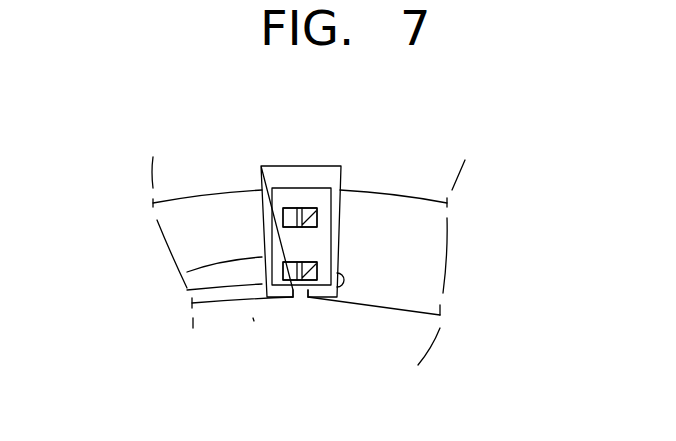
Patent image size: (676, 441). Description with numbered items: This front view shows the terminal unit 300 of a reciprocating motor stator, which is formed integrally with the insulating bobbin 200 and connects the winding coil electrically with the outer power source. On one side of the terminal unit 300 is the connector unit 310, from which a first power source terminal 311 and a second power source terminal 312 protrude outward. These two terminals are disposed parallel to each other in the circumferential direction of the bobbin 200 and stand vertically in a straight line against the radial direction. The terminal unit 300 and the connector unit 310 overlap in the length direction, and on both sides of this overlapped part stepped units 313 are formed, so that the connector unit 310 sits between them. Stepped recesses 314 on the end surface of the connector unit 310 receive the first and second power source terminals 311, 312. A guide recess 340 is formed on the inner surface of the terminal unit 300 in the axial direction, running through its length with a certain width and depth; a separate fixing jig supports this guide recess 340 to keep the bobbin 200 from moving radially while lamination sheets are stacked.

The bobbin 200 is at (193, 180).
The terminal unit 300 is at (252, 170).
The connector unit 310 is at (323, 222).
The first power source terminal 311 is at (320, 258).
The second power source terminal 312 is at (315, 208).
The stepped unit 313 is at (187, 272).
The stepped recess 314 is at (284, 262).
The guide recess 340 is at (298, 295).